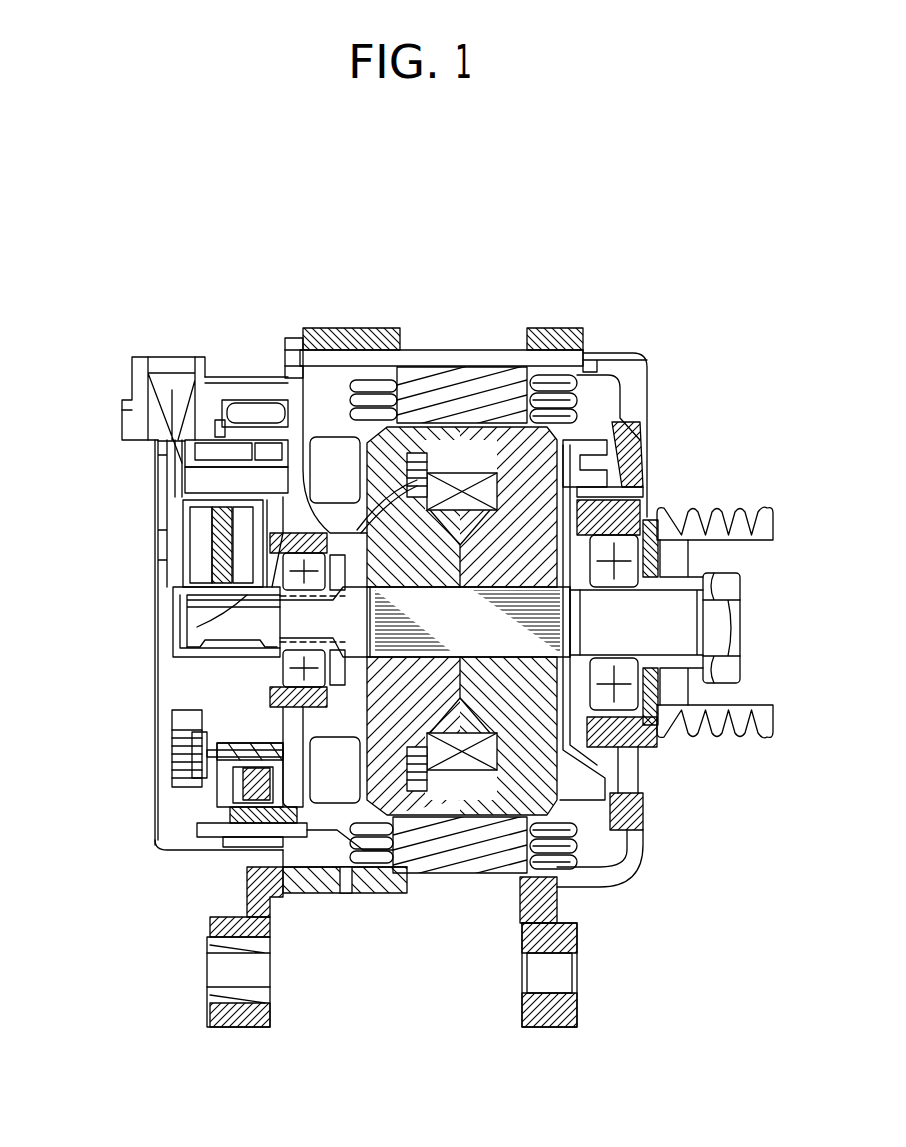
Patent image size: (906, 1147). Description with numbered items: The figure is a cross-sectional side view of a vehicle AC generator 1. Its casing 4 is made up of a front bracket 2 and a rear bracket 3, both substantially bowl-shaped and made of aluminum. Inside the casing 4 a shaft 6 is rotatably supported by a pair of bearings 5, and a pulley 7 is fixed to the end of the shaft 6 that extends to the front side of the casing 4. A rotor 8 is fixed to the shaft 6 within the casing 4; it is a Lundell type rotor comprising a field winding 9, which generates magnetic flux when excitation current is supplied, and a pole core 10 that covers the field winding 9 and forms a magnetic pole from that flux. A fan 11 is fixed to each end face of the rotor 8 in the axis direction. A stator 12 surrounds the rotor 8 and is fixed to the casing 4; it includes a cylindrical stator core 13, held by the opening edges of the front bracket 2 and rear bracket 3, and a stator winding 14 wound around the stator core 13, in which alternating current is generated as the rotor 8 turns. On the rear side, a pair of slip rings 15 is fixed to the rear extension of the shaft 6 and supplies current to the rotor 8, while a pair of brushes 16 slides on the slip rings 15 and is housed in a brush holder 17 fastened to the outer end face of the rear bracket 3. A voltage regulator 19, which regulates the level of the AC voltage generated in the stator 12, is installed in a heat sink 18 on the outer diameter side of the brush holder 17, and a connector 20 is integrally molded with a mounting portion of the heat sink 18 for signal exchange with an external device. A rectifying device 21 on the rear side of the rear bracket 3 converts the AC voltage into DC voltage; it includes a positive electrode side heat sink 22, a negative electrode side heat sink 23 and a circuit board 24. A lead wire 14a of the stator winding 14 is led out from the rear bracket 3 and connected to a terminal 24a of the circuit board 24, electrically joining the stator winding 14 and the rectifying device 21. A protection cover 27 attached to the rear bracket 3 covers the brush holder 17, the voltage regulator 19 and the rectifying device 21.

The vehicle AC generator 1 is at (52, 293).
The front bracket 2 is at (646, 428).
The rear bracket 3 is at (336, 326).
The casing 4 is at (660, 372).
The bearings 5 is at (648, 526).
The shaft 6 is at (679, 626).
The pulley 7 is at (728, 516).
The rotor 8 is at (457, 529).
The field winding 9 is at (454, 490).
The pole core 10 is at (483, 430).
The fan 11 is at (604, 453).
The stator 12 is at (443, 656).
The stator core 13 is at (466, 846).
The stator winding 14 is at (518, 875).
The lead wire 14a is at (346, 872).
The slip rings 15 is at (182, 622).
The brushes 16 is at (198, 530).
The brush holder 17 is at (190, 548).
The heat sink 18 is at (178, 480).
The voltage regulator 19 is at (155, 458).
The connector 20 is at (132, 359).
The rectifying device 21 is at (214, 833).
The positive electrode side heat sink 22 is at (217, 790).
The negative electrode side heat sink 23 is at (228, 806).
The circuit board 24 is at (207, 836).
The terminal 24a is at (255, 848).
The protection cover 27 is at (200, 866).